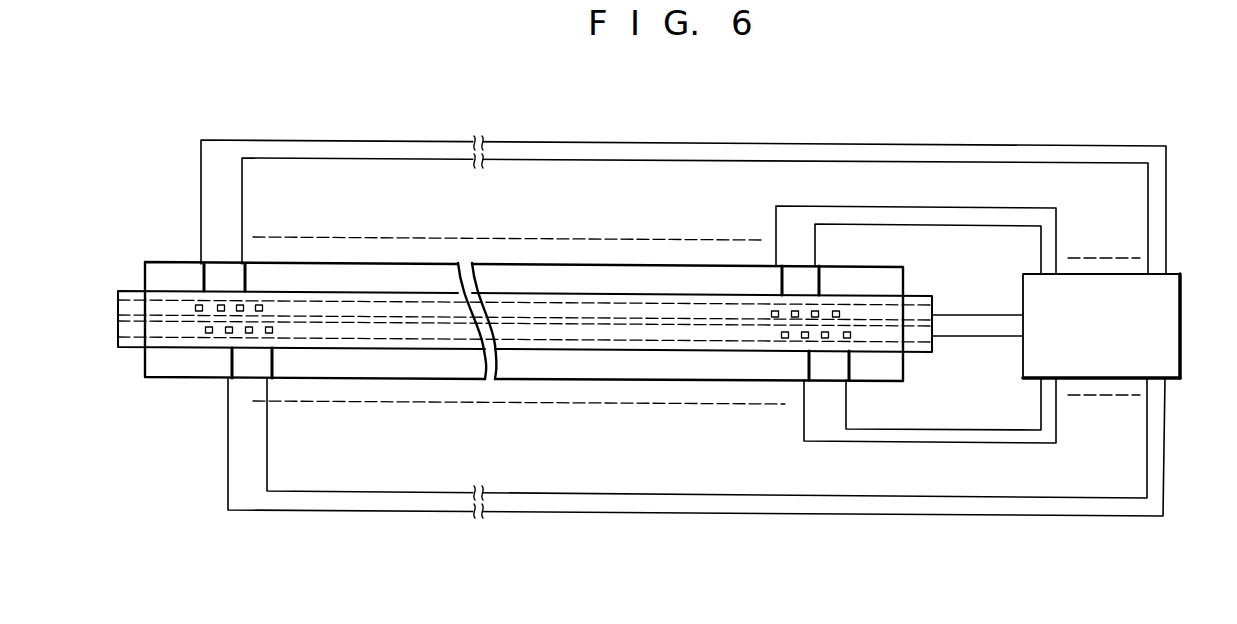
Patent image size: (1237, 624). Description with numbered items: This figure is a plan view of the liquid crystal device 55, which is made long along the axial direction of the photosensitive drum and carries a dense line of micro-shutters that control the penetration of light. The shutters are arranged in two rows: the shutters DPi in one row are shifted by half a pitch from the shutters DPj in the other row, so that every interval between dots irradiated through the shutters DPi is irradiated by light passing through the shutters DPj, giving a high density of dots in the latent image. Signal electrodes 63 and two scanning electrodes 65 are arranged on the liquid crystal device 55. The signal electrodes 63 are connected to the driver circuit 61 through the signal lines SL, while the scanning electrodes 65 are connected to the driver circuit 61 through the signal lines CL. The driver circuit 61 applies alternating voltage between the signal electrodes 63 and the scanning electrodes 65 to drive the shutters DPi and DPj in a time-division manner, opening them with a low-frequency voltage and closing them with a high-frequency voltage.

The liquid crystal device 55 is at (567, 381).
The driver circuit 61 is at (1182, 306).
The signal electrodes 63 is at (197, 267).
The scanning electrodes 65 is at (413, 302).
The signal lines SL is at (662, 141).
The signal lines CL is at (980, 314).
The shutters DPi is at (221, 305).
The shutters DPj is at (229, 335).